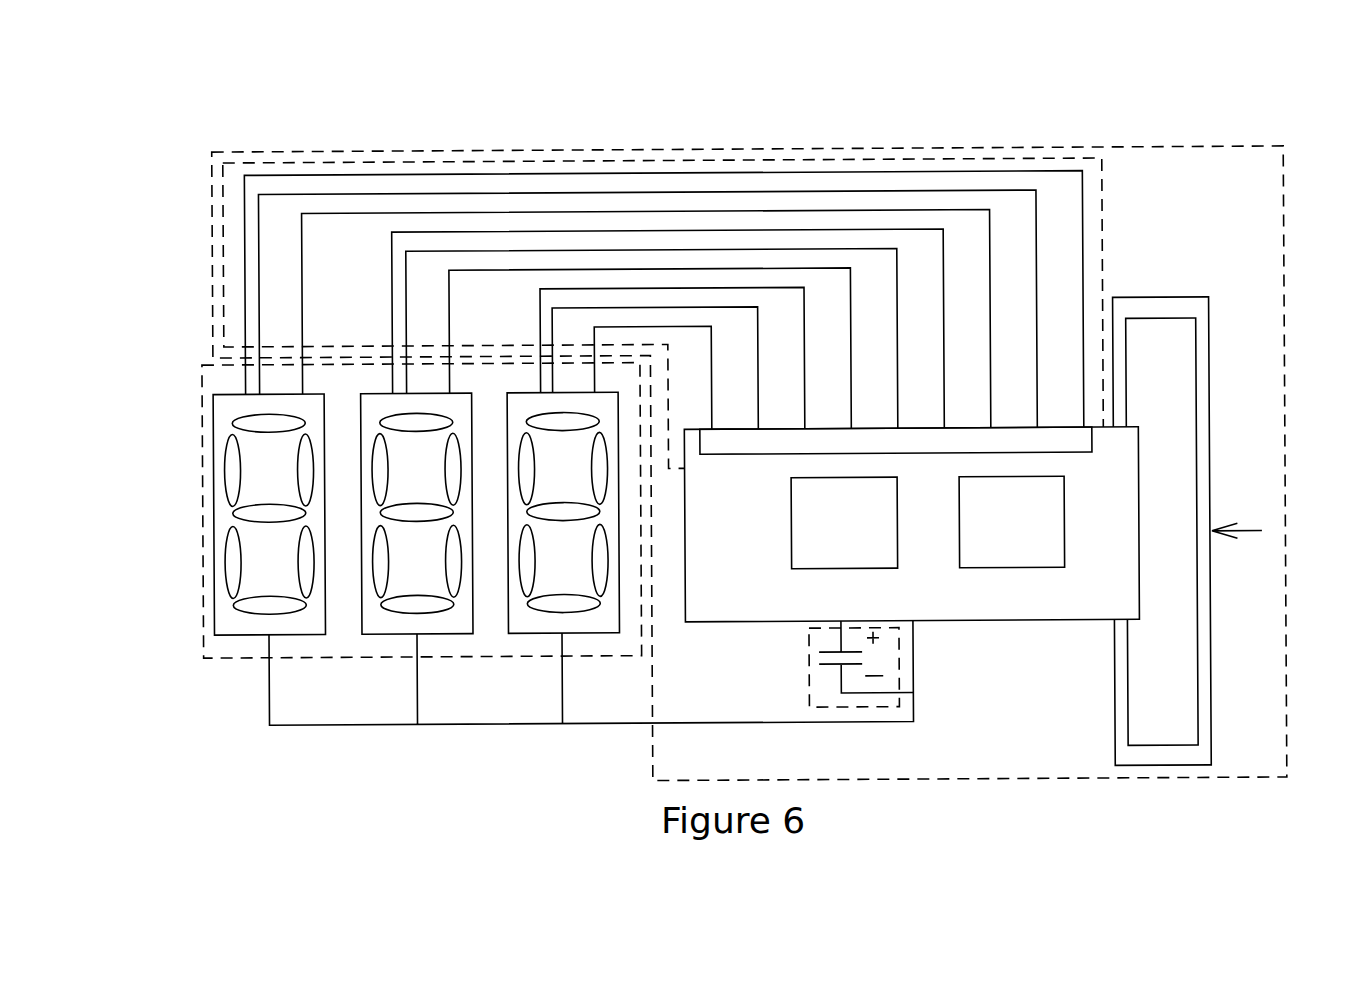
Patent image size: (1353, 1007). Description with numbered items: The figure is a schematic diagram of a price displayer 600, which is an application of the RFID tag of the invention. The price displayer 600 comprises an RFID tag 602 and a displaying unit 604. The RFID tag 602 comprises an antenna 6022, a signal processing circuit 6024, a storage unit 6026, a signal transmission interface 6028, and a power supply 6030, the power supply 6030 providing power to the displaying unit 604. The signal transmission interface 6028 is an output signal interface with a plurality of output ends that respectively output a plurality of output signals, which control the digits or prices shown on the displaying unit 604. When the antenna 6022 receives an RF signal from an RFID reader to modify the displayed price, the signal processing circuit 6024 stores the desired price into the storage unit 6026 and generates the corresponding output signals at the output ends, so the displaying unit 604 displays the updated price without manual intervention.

The price displayer 600 is at (1220, 130).
The RFID tag 602 is at (212, 197).
The displaying unit 604 is at (202, 577).
The antenna 6022 is at (1144, 300).
The signal processing circuit 6024 is at (980, 569).
The storage unit 6026 is at (811, 569).
The signal transmission interface 6028 is at (223, 255).
The power supply 6030 is at (809, 678).